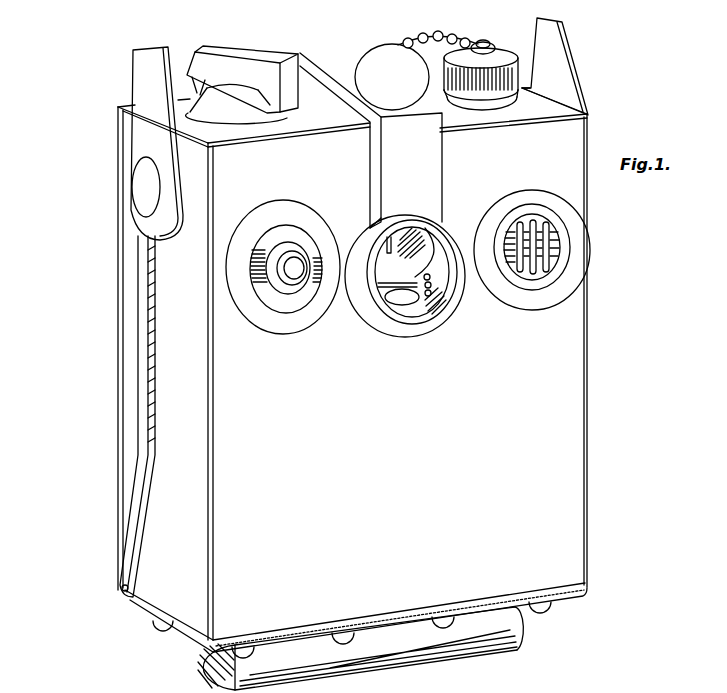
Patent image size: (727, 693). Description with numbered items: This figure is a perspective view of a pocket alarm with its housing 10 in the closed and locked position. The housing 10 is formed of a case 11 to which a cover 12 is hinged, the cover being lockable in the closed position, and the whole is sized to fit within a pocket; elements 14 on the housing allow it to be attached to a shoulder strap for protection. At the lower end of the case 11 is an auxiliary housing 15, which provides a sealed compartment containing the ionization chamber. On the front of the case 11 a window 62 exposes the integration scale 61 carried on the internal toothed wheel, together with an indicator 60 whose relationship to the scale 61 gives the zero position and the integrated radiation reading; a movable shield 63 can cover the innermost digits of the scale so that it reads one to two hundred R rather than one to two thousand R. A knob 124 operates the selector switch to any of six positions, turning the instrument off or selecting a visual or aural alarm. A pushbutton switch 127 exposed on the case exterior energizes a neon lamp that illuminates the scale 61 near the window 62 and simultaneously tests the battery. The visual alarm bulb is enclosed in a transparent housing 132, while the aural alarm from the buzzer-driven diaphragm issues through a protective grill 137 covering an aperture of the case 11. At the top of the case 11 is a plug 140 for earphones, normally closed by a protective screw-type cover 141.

The housing 10 is at (377, 355).
The case 11 is at (588, 467).
The cover 12 is at (135, 402).
The elements 14 is at (137, 79).
The auxiliary housing 15 is at (519, 636).
The indicator 60 is at (401, 269).
The integration scale 61 is at (418, 240).
The window 62 is at (398, 306).
The movable shield 63 is at (418, 306).
The knob 124 is at (237, 52).
The pushbutton switch 127 is at (292, 286).
The transparent housing 132 is at (383, 52).
The protective grill 137 is at (533, 272).
The plug 140 is at (501, 105).
The protective screw-type cover 141 is at (511, 53).